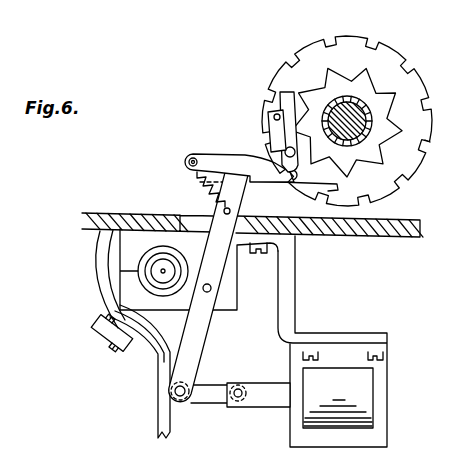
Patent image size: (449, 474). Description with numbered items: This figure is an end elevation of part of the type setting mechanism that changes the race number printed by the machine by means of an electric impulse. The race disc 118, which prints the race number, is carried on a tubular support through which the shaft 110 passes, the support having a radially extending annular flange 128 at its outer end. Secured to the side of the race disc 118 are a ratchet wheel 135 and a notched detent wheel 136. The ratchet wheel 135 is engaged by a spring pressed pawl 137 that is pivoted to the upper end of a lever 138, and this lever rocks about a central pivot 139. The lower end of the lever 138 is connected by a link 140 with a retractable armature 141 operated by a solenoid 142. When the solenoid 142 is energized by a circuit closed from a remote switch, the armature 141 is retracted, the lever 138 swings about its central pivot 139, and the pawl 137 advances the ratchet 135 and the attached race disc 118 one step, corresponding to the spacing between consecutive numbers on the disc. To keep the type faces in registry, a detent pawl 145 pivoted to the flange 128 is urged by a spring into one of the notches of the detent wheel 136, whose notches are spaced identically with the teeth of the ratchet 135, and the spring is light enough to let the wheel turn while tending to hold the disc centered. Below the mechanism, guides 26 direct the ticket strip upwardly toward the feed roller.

The guides 26 is at (156, 386).
The shaft 110 is at (358, 115).
The race disc 118 is at (349, 46).
The annular flange 128 is at (272, 128).
The ratchet wheel 135 is at (412, 151).
The notched detent wheel 136 is at (336, 92).
The pawl 137 is at (262, 160).
The lever 138 is at (222, 214).
The central pivot 139 is at (212, 289).
The link 140 is at (212, 398).
The retractable armature 141 is at (272, 404).
The solenoid 142 is at (340, 418).
The detent pawl 145 is at (295, 97).